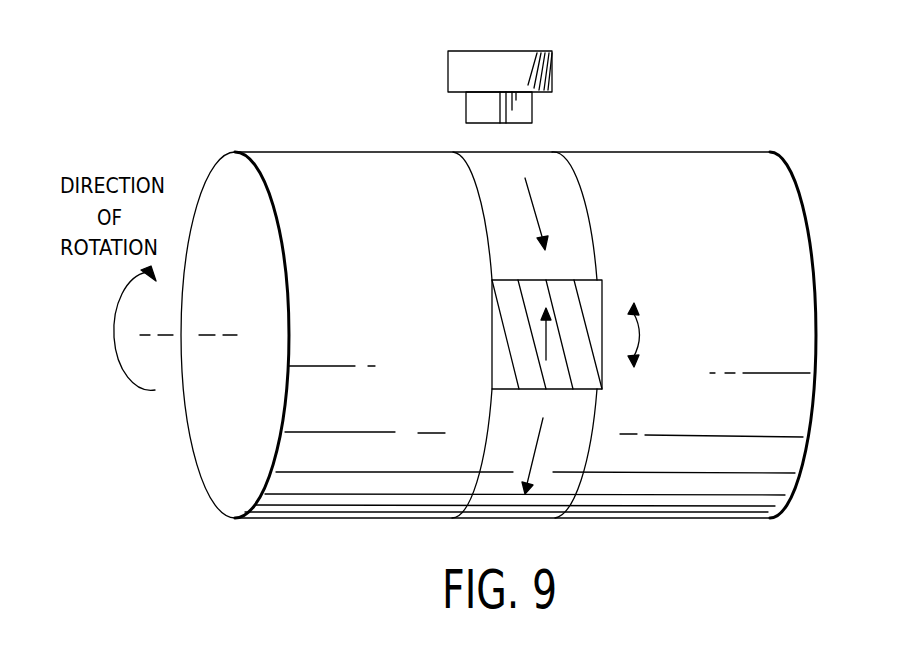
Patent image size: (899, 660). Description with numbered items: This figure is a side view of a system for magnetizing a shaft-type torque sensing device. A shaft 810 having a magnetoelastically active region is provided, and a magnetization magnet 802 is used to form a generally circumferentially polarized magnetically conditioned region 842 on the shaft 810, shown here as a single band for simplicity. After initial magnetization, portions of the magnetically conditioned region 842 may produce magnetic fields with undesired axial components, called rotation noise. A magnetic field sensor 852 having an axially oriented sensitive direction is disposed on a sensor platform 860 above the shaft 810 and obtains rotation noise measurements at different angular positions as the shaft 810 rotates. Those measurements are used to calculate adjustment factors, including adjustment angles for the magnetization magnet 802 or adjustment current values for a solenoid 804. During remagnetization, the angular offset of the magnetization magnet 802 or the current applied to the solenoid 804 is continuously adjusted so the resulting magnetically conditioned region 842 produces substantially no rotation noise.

The shaft 810 is at (808, 230).
The magnetically conditioned region 842 is at (622, 217).
The magnetization magnet 802 is at (492, 352).
The solenoid 804 is at (492, 312).
The sensor platform 860 is at (463, 65).
The magnetic field sensor 852 is at (565, 102).